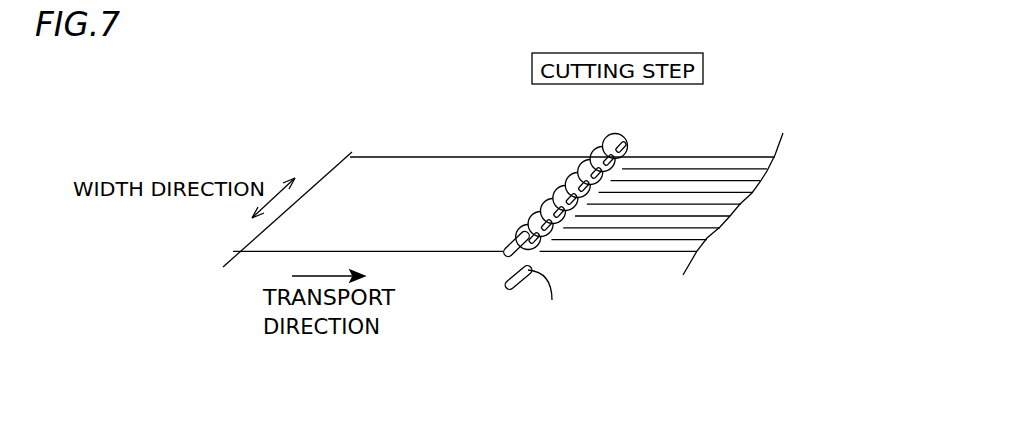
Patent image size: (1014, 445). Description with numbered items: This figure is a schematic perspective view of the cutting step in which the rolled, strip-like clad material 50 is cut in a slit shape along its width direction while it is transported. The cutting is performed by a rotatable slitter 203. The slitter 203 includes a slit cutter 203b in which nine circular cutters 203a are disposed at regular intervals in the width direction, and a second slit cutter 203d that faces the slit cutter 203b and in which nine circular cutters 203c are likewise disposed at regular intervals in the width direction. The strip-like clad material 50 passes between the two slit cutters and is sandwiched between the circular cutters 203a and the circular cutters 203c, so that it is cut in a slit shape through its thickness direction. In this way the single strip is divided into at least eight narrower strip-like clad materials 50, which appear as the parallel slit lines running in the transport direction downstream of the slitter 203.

The clad material 50 is at (380, 185).
The slitter 203 is at (626, 130).
The circular cutters 203a is at (560, 186).
The slit cutter 203b is at (603, 144).
The circular cutters 203c is at (545, 280).
The slit cutter 203d is at (512, 298).